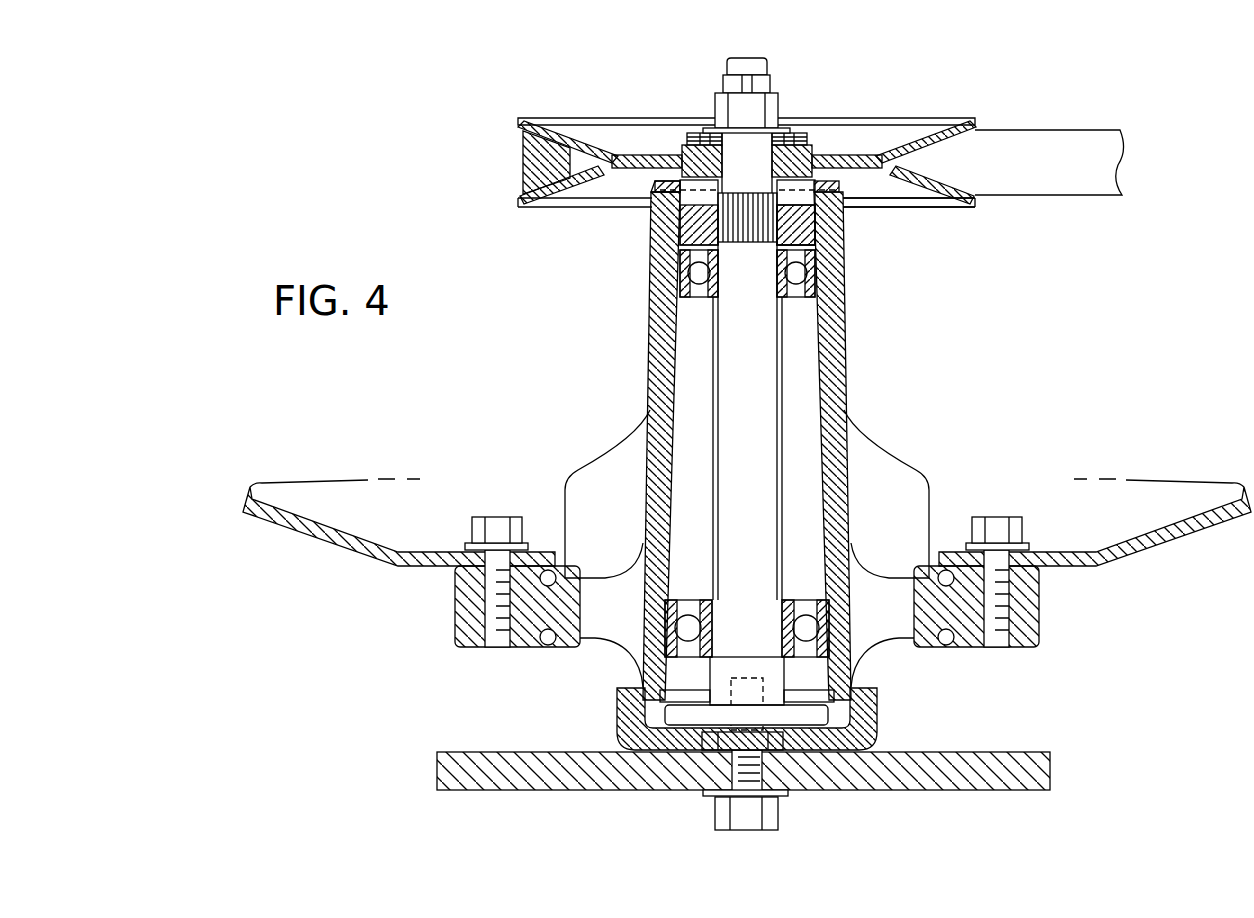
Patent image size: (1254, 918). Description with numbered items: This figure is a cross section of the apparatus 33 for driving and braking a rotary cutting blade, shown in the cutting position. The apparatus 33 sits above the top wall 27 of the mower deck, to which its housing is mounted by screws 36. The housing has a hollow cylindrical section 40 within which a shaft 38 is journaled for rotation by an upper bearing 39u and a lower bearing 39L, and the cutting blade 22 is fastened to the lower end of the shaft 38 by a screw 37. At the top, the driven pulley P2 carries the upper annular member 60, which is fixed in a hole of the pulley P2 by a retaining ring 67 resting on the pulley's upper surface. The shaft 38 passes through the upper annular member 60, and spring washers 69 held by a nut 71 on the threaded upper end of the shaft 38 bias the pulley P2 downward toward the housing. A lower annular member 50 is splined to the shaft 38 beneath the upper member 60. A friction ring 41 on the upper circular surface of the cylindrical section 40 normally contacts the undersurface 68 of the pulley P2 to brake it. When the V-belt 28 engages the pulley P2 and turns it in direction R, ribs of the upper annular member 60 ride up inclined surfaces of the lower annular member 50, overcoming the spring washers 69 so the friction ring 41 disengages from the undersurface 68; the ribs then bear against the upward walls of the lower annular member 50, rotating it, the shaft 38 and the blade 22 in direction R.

The rotary blade 22 is at (498, 780).
The top wall 27 is at (1178, 528).
The belt 28 is at (1045, 142).
The apparatus 33 is at (1014, 400).
The screws 36 is at (497, 528).
The screw 37 is at (747, 815).
The shaft 38 is at (760, 386).
The upper bearing 39u is at (815, 273).
The lower bearing 39L is at (797, 597).
The hollow cylindrical section 40 is at (845, 330).
The friction ring 41 is at (647, 185).
The lower annular member 50 is at (790, 224).
The upper annular member 60 is at (696, 202).
The retaining ring 67 is at (682, 160).
The undersurface 68 is at (873, 186).
The spring washers 69 is at (818, 140).
The nut 71 is at (788, 92).
The driven pulley P2 is at (880, 122).
The direction of rotation R is at (543, 80).